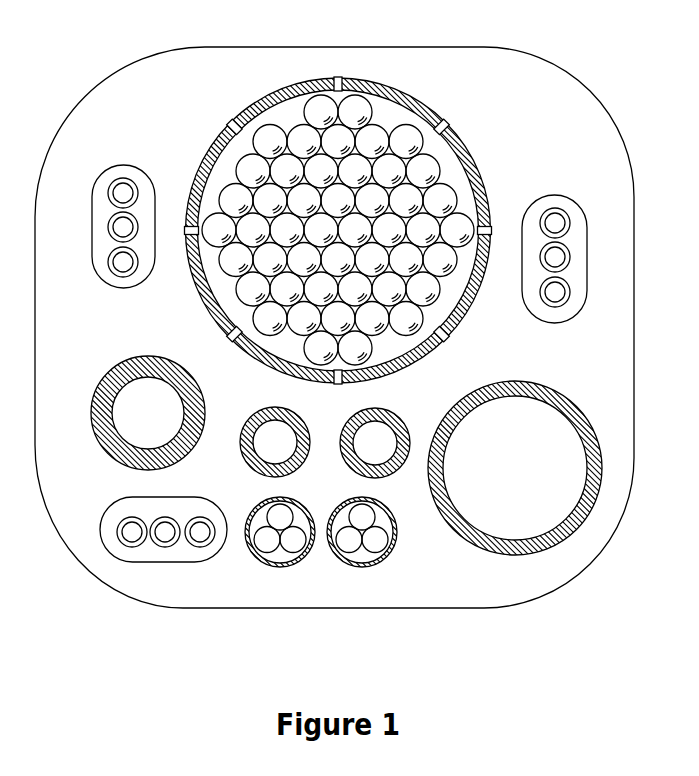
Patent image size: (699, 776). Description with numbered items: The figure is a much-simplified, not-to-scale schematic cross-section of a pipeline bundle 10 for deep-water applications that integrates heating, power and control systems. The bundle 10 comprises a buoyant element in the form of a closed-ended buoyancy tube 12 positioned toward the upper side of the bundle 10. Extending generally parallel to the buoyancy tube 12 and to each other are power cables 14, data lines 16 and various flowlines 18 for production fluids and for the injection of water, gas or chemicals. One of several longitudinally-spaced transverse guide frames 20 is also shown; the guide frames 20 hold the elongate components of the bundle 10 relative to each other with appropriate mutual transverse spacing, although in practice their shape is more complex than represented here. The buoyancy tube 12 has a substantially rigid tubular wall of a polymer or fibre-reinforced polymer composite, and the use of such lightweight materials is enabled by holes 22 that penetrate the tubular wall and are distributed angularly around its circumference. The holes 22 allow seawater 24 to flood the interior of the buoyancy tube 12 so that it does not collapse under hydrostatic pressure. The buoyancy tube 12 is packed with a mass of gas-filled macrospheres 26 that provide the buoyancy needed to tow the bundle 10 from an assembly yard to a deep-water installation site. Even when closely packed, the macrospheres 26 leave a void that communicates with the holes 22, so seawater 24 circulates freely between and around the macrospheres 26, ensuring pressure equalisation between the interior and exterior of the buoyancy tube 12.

The pipeline bundle 10 is at (60, 75).
The buoyancy tube 12 is at (338, 245).
The power cables 14 is at (257, 553).
The data lines 16 is at (137, 173).
The flowlines 18 is at (112, 380).
The guide frame 20 is at (578, 110).
The holes 22 is at (339, 84).
The seawater 24 is at (262, 110).
The macrospheres 26 is at (423, 203).